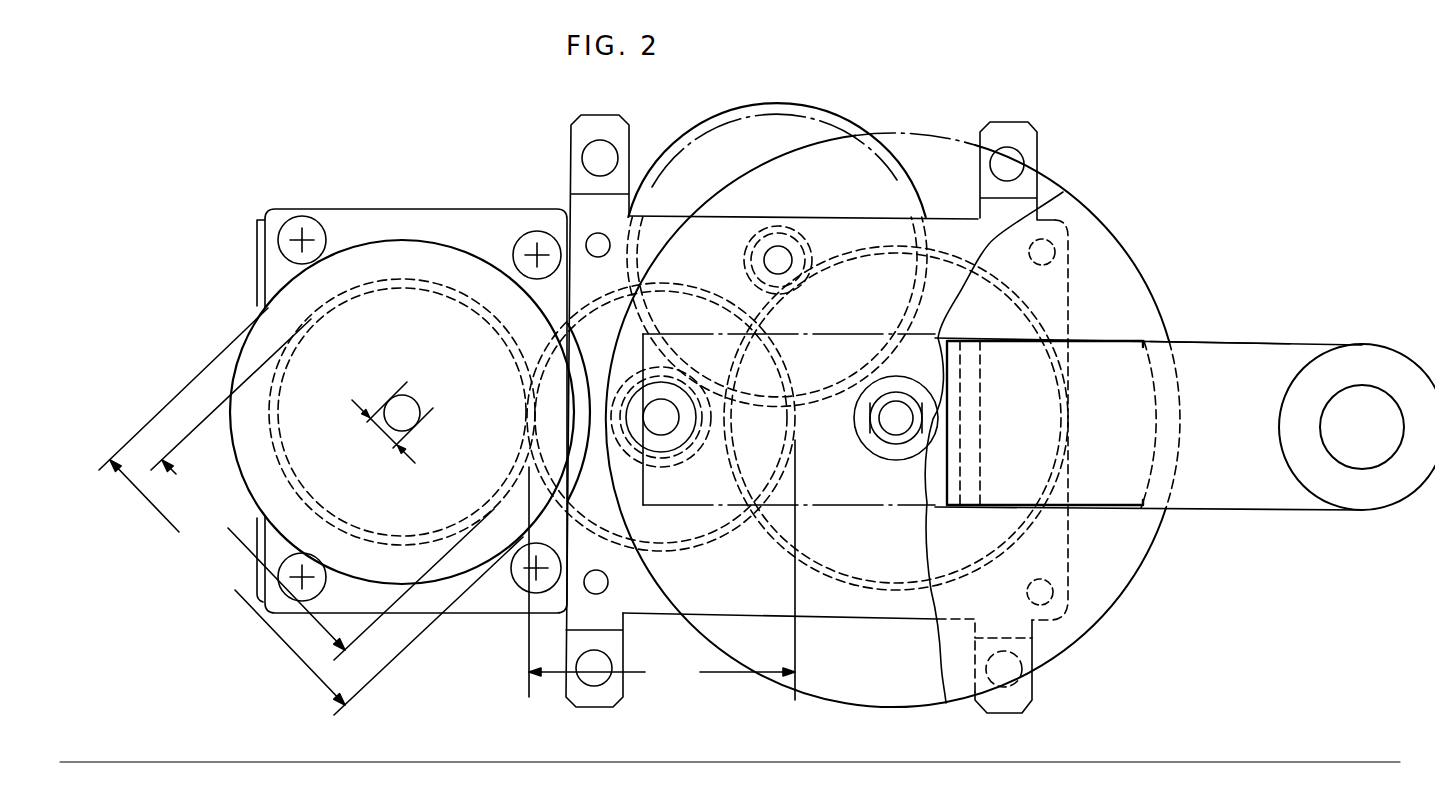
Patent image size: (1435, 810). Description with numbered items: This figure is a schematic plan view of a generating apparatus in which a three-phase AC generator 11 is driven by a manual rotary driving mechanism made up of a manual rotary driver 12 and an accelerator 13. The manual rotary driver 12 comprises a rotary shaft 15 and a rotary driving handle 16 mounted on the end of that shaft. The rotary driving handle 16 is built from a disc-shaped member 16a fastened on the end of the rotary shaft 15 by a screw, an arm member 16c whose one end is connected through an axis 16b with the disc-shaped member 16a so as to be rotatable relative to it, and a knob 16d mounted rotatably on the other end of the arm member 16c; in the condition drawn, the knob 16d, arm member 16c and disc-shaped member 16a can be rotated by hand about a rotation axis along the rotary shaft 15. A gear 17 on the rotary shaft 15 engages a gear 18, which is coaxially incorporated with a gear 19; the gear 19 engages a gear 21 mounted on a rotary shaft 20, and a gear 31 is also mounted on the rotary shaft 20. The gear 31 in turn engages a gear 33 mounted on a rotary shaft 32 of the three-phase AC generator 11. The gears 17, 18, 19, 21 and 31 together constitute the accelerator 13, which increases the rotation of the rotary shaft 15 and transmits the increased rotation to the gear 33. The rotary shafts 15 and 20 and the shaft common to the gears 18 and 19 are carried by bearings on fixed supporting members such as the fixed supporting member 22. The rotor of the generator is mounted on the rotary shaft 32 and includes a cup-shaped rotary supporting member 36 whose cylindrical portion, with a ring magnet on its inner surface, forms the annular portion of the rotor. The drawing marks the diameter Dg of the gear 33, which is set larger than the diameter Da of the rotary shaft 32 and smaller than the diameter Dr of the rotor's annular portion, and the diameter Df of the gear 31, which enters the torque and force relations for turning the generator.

The three-phase AC generator 11 is at (397, 230).
The manual rotary driver 12 is at (1188, 322).
The accelerator 13 is at (778, 558).
The rotary shaft 15 is at (895, 428).
The rotary driving handle 16 is at (1188, 513).
The disc-shaped member 16a is at (1107, 240).
The axis 16b is at (968, 507).
The arm member 16c is at (1252, 354).
The knob 16d is at (1358, 407).
The gear 17 is at (1015, 298).
The gear 18 is at (746, 256).
The gear 19 is at (720, 119).
The rotary shaft 20 is at (662, 427).
The gear 21 is at (592, 372).
The fixed supporting member 22 is at (977, 240).
The gear 31 is at (707, 543).
The rotary shaft 32 is at (395, 402).
The gear 33 is at (277, 453).
The cup-shaped rotary supporting member 36 is at (472, 274).
The diameter of the rotary shaft Da is at (388, 428).
The diameter of the gear Dg is at (322, 489).
The diameter of the annular portion of the rotor Dr is at (311, 511).
The diameter of the gear Df is at (662, 570).